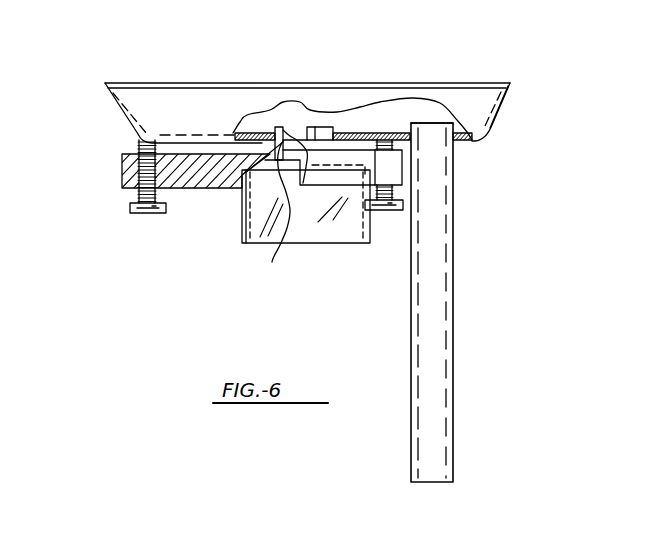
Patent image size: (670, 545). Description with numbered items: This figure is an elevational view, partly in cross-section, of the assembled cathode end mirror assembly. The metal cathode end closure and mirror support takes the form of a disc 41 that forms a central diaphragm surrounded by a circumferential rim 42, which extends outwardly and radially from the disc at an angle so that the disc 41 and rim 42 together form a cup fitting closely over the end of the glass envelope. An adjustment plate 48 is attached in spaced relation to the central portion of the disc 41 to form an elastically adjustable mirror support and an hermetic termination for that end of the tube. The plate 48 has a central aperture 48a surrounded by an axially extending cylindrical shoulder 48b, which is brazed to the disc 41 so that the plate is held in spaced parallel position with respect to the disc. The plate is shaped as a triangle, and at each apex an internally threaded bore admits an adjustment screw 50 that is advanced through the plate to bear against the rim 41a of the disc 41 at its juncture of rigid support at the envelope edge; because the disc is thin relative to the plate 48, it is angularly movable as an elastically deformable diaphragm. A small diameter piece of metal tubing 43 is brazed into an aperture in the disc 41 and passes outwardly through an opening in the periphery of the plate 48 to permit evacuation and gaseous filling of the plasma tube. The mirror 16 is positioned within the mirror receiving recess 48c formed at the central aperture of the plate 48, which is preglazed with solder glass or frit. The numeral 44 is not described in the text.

The mirror 16 is at (241, 237).
The disc 41 is at (382, 135).
The rim of the disc 41a is at (156, 138).
The circumferential rim 42 is at (490, 112).
The metal tubing 43 is at (455, 298).
The column top opening 44 is at (446, 136).
The adjustment plate 48 is at (165, 181).
The central aperture 48a is at (272, 262).
The cylindrical shoulder 48b is at (283, 141).
The mirror receiving recess 48c is at (238, 192).
The adjustment screw 50 is at (131, 209).